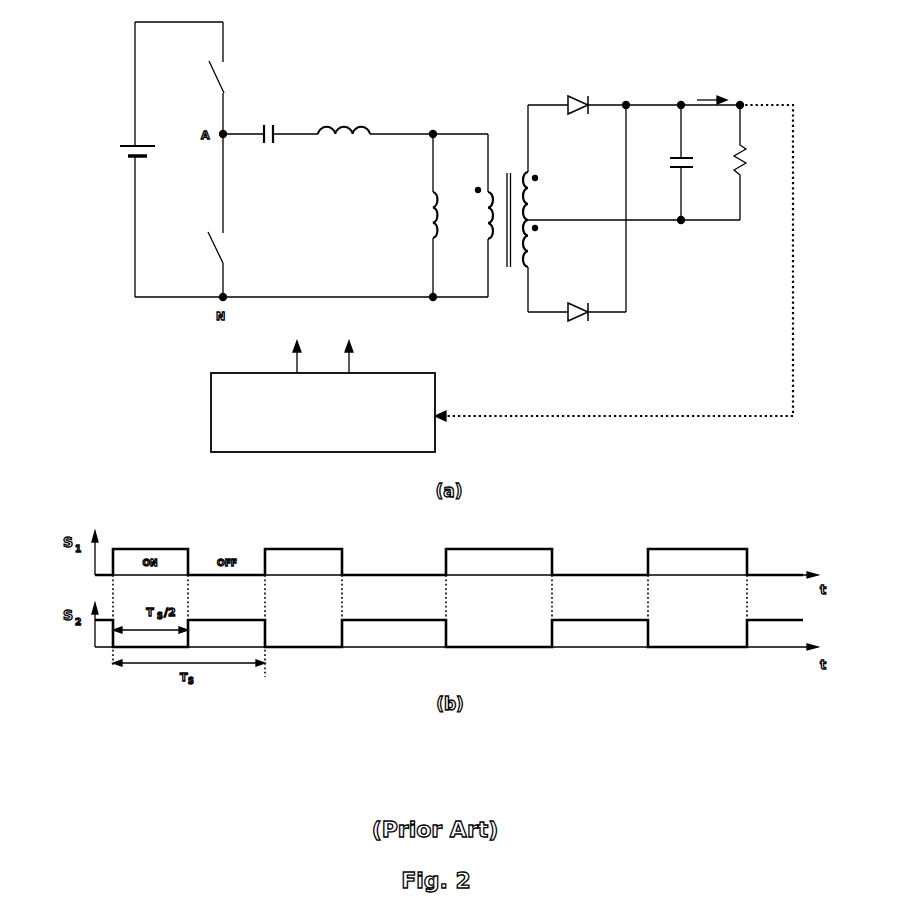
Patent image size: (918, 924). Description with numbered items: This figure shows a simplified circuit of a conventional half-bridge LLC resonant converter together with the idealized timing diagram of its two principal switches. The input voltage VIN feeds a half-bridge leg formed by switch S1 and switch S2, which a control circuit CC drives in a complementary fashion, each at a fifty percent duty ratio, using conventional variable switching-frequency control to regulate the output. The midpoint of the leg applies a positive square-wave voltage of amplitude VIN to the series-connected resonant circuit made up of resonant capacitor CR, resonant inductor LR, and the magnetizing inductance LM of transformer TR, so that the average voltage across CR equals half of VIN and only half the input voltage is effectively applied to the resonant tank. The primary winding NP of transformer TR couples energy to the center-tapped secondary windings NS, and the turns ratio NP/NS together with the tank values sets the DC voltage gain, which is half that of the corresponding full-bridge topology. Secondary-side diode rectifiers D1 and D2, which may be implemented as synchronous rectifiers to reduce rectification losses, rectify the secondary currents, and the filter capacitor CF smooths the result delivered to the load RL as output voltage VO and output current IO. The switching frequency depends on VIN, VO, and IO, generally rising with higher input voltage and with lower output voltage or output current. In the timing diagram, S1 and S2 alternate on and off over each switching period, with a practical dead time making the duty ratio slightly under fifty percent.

The input voltage VIN is at (121, 159).
The switch S1 is at (201, 78).
The switch S2 is at (201, 215).
The resonant capacitor CR is at (270, 141).
The resonant inductor LR is at (344, 120).
The magnetizing inductance LM is at (417, 215).
The primary winding NP is at (474, 215).
The transformer TR is at (505, 208).
The secondary winding NS is at (541, 208).
The secondary-side diode rectifier D1 is at (634, 95).
The secondary-side diode rectifier D2 is at (577, 301).
The filter capacitor CF is at (668, 162).
The load resistor RL is at (726, 162).
The output current IO is at (712, 92).
The output voltage VO is at (761, 163).
The control circuit CC is at (323, 387).